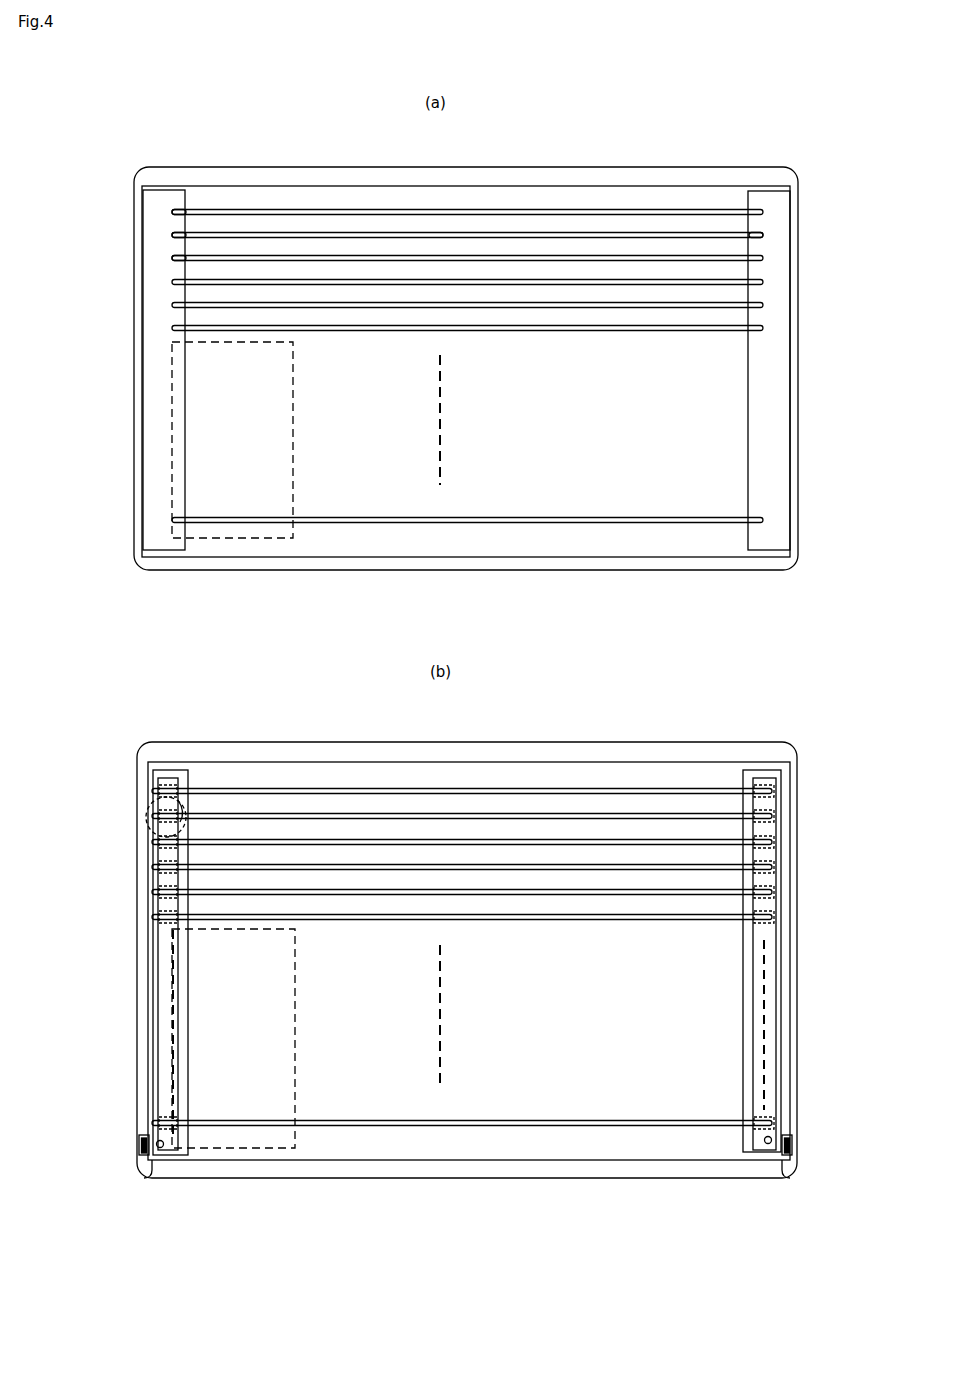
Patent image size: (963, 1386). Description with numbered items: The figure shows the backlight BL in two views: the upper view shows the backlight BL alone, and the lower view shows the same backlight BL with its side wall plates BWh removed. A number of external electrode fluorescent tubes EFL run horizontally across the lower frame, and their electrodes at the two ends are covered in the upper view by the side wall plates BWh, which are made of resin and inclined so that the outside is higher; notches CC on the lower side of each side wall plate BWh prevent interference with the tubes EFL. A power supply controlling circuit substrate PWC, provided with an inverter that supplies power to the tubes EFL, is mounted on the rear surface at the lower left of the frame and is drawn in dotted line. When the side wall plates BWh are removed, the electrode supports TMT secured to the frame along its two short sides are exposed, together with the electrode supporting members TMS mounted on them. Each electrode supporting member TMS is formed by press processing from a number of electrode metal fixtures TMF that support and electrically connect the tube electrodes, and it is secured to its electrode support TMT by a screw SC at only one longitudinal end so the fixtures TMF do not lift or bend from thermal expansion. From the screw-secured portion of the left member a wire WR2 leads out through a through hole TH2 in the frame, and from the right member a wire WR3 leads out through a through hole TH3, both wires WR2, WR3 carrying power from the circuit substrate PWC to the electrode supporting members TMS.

The backlight BL is at (262, 140).
The external electrode fluorescent tube EFL is at (608, 210).
The notch CC is at (175, 212).
The side wall plate BWh is at (155, 465).
The power supply controlling circuit substrate PWC is at (273, 538).
The electrode metal fixture TMF is at (157, 783).
The electrode support TMT is at (152, 980).
The electrode supporting member TMS is at (153, 898).
The through hole TH2 is at (141, 1140).
The through hole TH3 is at (789, 1140).
The wire WR2 is at (146, 1156).
The wire WR3 is at (786, 1153).
The screw SC is at (165, 1150).